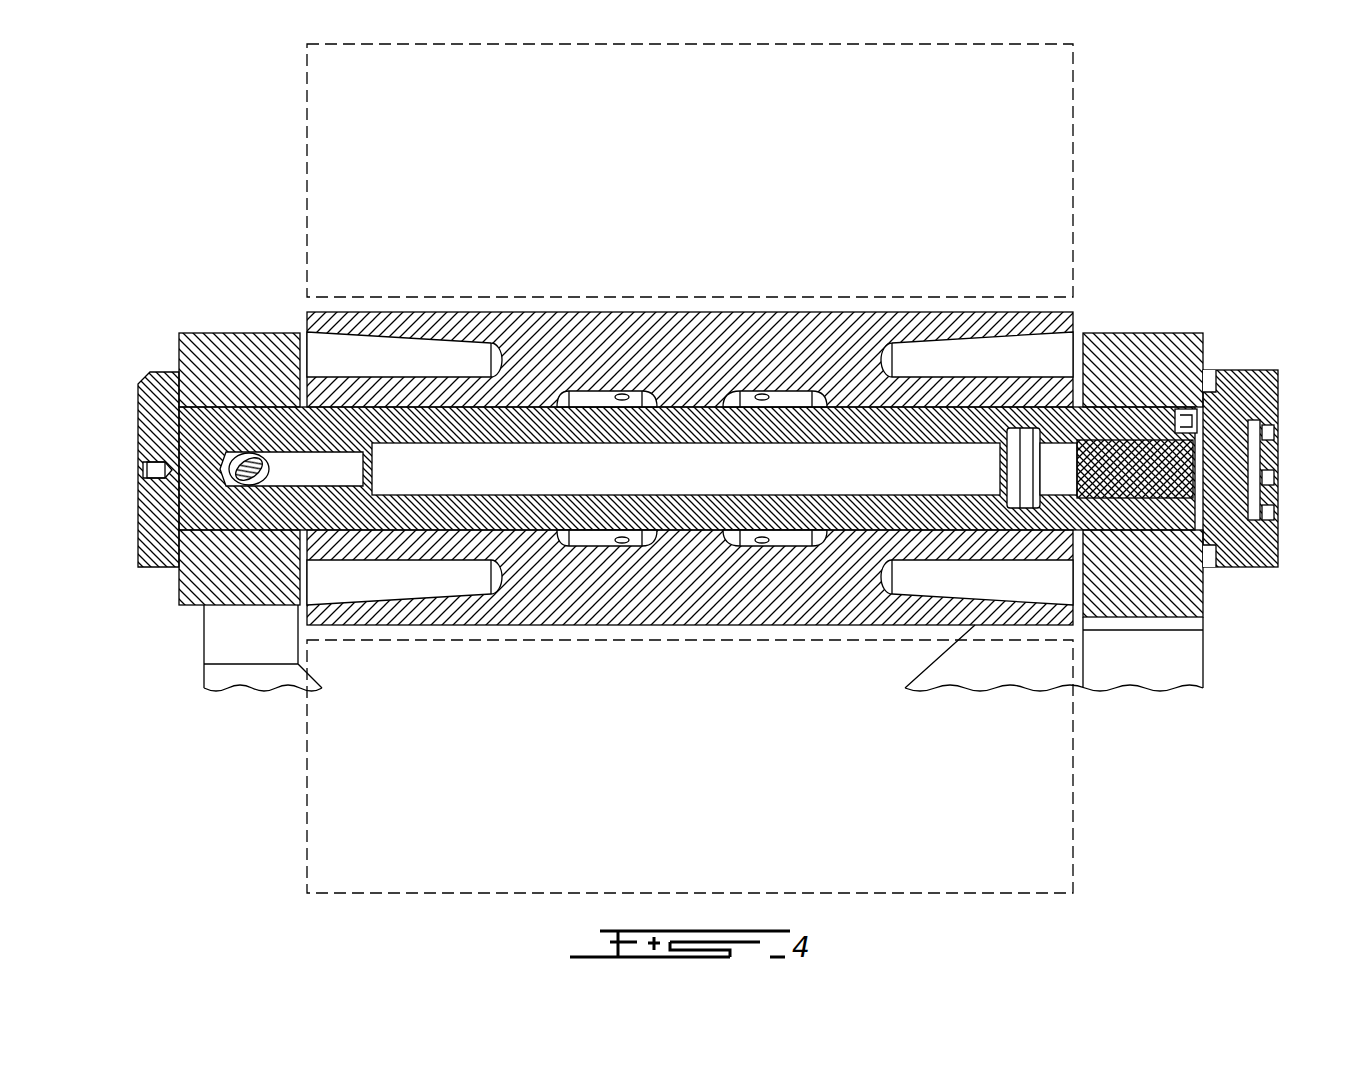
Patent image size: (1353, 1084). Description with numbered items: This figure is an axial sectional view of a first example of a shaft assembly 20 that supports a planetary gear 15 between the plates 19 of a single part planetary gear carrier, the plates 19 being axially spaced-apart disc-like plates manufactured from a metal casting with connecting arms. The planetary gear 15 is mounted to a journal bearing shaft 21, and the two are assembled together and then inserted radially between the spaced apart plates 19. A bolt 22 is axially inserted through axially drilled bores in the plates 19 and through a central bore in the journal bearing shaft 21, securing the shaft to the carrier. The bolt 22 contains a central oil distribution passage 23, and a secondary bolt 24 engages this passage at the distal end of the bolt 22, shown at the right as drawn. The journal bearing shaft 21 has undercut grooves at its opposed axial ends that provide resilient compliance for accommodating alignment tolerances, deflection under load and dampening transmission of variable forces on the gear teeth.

The planetary gear 15 is at (708, 143).
The plates 19 is at (233, 333).
The shaft assembly 20 is at (703, 399).
The journal bearing shaft 21 is at (709, 362).
The bolt 22 is at (177, 500).
The central oil distribution passage 23 is at (697, 473).
The secondary bolt 24 is at (1220, 467).